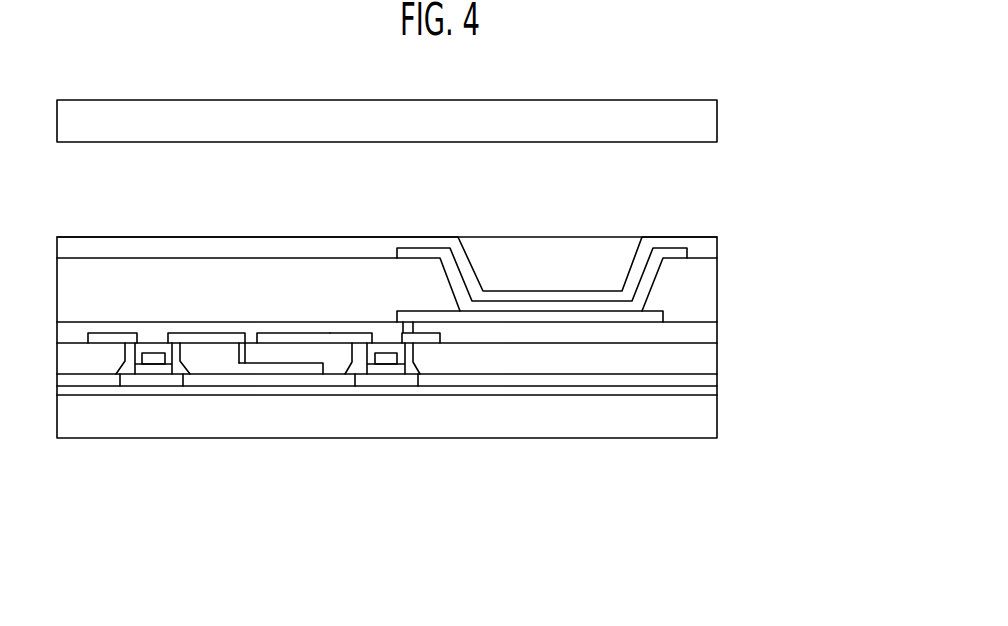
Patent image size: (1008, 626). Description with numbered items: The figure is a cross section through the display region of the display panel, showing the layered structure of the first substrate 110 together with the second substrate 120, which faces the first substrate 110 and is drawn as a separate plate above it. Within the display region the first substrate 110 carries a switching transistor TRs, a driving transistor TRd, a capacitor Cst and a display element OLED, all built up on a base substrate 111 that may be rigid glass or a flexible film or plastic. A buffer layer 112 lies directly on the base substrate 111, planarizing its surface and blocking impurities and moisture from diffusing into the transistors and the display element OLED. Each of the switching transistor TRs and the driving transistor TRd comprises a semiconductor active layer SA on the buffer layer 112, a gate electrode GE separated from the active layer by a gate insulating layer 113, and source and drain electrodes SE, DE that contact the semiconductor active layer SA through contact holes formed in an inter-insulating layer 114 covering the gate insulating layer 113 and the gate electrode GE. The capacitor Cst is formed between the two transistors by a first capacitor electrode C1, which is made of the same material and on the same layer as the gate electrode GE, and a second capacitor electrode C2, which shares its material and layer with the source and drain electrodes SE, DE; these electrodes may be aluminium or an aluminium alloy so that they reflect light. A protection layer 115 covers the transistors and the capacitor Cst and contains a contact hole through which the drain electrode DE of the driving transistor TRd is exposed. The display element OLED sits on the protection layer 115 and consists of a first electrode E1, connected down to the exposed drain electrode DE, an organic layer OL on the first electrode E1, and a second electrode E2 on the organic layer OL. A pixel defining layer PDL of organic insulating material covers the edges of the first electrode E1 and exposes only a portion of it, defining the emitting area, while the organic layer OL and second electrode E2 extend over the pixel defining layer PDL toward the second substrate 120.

The second substrate 120 is at (705, 119).
The first substrate 110 is at (830, 240).
The base substrate 111 is at (705, 423).
The buffer layer 112 is at (705, 392).
The gate insulating layer 113 is at (705, 382).
The inter-insulating layer 114 is at (705, 362).
The protection layer 115 is at (705, 335).
The pixel defining layer PDL is at (705, 310).
The display element OLED is at (445, 274).
The first electrode E1 is at (707, 310).
The organic layer OL is at (648, 278).
The second electrode E2 is at (779, 308).
The switching transistor TRs is at (230, 497).
The driving transistor TRd is at (493, 497).
The capacitor Cst is at (325, 497).
The source electrode SE is at (105, 338).
The semiconductor active layer SA is at (132, 382).
The gate electrode GE is at (157, 360).
The drain electrode DE is at (205, 338).
The first capacitor electrode C1 is at (270, 368).
The second capacitor electrode C2 is at (300, 338).